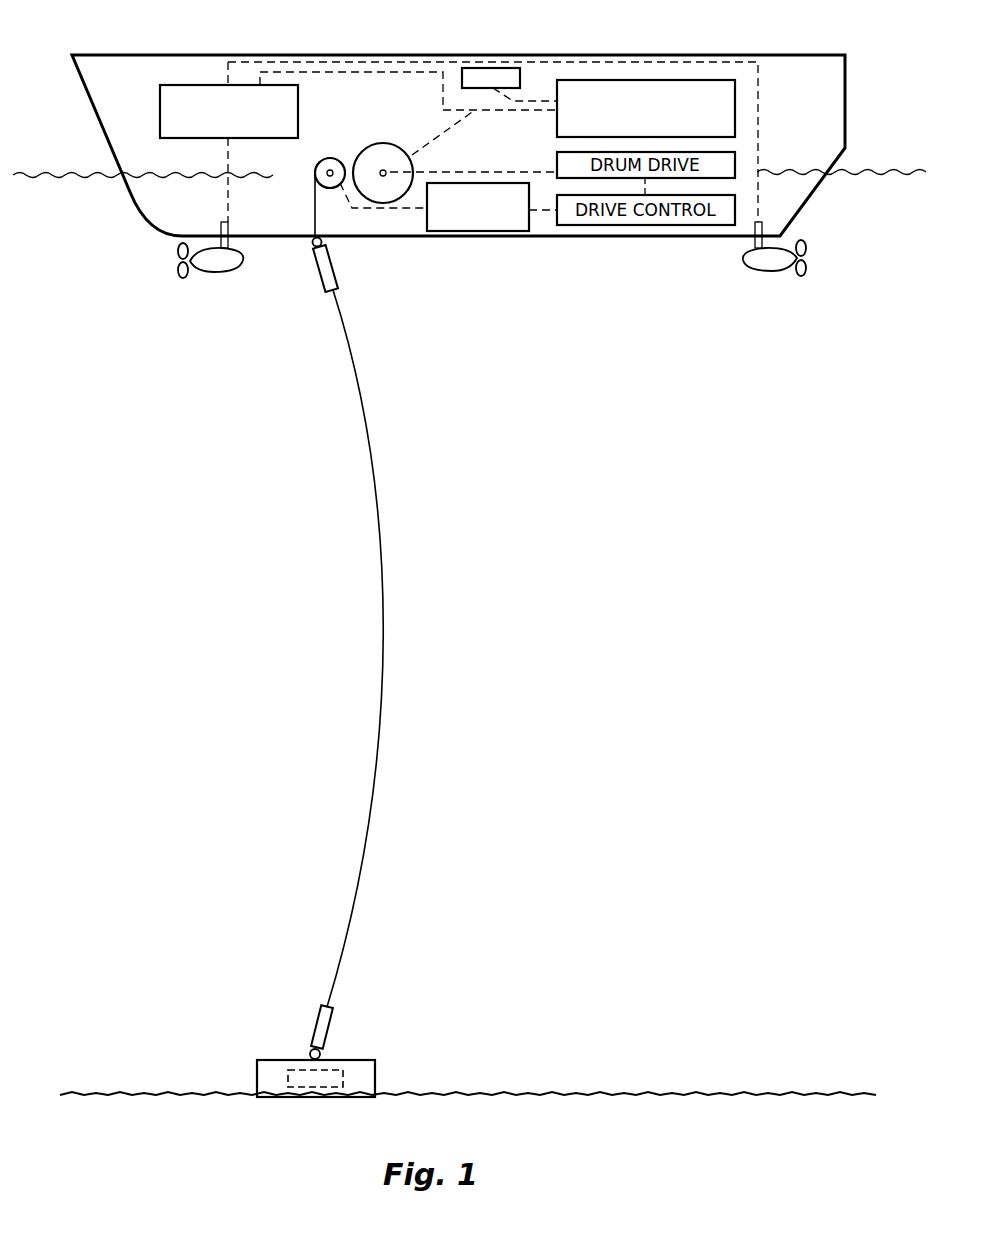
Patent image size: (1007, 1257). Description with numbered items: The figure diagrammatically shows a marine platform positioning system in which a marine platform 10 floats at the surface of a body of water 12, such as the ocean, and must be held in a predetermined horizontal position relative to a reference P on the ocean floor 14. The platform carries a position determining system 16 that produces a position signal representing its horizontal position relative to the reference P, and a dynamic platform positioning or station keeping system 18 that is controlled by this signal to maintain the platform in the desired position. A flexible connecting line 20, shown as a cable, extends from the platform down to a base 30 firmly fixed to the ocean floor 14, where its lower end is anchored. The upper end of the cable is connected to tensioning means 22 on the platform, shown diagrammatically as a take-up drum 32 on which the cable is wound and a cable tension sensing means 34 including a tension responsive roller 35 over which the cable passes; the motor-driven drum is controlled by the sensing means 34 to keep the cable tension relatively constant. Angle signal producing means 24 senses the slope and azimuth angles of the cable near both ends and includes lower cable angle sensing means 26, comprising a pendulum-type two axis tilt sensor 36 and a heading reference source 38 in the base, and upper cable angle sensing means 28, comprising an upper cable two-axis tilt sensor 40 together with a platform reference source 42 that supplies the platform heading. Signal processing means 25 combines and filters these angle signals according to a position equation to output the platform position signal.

The marine platform 10 is at (806, 208).
The body of water 12 is at (893, 165).
The ocean floor 14 is at (668, 1093).
The position determining system 16 is at (124, 484).
The dynamic platform positioning system 18 is at (160, 110).
The flexible connecting line 20 is at (388, 570).
The tensioning means 22 is at (367, 145).
The angle signal producing means 24 is at (304, 262).
The signal processing means 25 is at (652, 80).
The lower cable angle sensing means 26 is at (309, 1050).
The upper cable angle sensing means 28 is at (320, 275).
The base 30 is at (376, 1073).
The take-up drum 32 is at (410, 155).
The cable tension sensing means 34 is at (482, 236).
The tension responsive roller 35 is at (360, 140).
The two axis tilt sensor 36 is at (336, 1030).
The heading reference source 38 is at (288, 1077).
The upper cable two-axis tilt sensor 40 is at (338, 268).
The platform reference source 42 is at (490, 68).
The reference P is at (323, 1052).